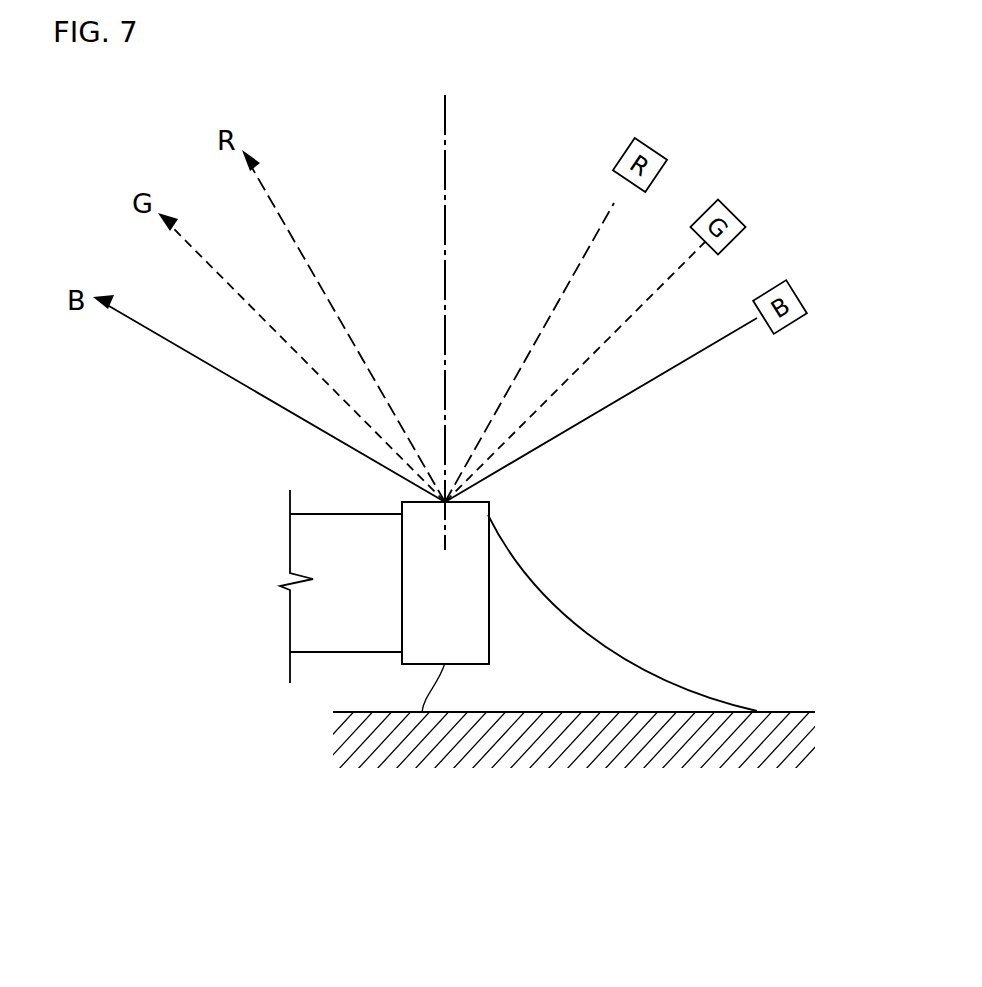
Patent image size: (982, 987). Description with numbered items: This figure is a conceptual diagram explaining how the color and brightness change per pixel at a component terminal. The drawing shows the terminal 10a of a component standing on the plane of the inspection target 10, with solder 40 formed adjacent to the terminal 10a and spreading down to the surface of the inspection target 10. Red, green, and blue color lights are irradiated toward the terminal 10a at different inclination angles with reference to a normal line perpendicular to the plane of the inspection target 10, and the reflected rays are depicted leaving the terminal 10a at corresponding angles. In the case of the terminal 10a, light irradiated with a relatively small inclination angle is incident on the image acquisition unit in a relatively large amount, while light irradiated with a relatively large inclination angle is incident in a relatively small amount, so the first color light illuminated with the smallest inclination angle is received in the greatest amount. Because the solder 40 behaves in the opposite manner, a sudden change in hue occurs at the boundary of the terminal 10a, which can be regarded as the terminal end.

The inspection target 10 is at (378, 672).
The terminal of the component 10a is at (463, 663).
The solder 40 is at (593, 677).